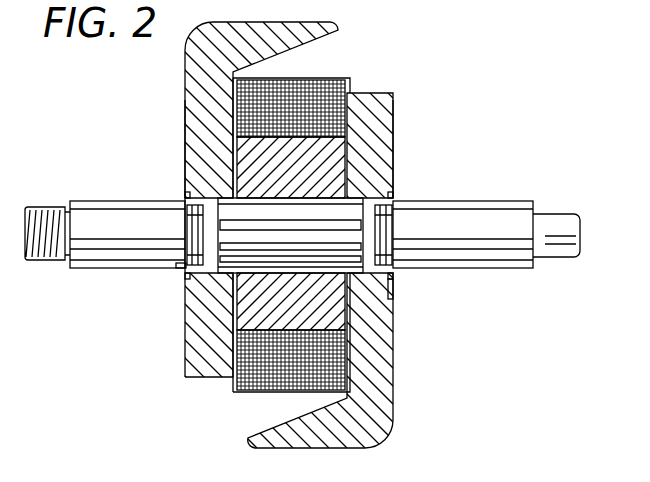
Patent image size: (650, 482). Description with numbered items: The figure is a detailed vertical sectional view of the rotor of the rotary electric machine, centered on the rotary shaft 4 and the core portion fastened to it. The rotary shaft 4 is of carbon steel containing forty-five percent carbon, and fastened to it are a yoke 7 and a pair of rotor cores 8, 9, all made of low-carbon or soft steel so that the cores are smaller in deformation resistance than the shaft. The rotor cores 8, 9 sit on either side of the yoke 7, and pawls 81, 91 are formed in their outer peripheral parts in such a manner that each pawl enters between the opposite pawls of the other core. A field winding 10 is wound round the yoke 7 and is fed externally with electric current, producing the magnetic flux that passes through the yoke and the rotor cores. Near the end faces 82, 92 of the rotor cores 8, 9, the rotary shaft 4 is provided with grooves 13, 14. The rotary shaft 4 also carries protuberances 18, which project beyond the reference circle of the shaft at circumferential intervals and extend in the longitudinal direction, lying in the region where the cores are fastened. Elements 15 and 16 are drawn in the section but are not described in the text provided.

The rotary shaft 4 is at (495, 213).
The yoke 7 is at (333, 162).
The rotor core 8 is at (197, 345).
The pawl 81 is at (340, 30).
The end face 82 is at (185, 150).
The rotor core 9 is at (387, 370).
The pawl 91 is at (258, 437).
The end face 92 is at (395, 172).
The field winding 10 is at (348, 84).
The groove 13 is at (185, 212).
The groove 14 is at (385, 208).
The retaining ring 15 is at (180, 267).
The rotor 16 is at (395, 255).
The protuberances 18 is at (393, 298).